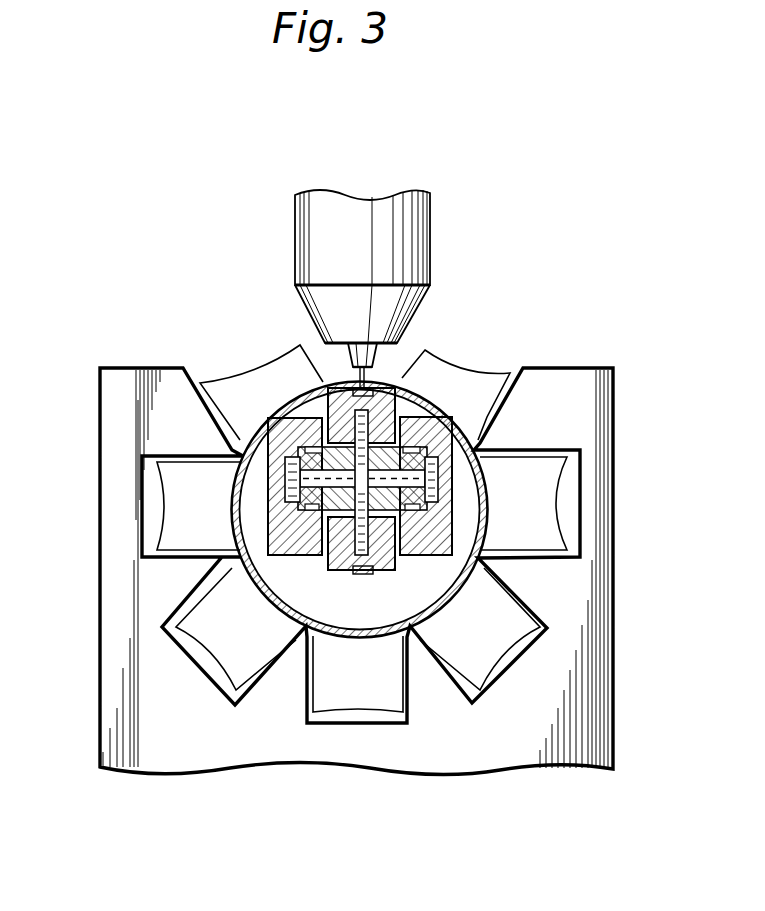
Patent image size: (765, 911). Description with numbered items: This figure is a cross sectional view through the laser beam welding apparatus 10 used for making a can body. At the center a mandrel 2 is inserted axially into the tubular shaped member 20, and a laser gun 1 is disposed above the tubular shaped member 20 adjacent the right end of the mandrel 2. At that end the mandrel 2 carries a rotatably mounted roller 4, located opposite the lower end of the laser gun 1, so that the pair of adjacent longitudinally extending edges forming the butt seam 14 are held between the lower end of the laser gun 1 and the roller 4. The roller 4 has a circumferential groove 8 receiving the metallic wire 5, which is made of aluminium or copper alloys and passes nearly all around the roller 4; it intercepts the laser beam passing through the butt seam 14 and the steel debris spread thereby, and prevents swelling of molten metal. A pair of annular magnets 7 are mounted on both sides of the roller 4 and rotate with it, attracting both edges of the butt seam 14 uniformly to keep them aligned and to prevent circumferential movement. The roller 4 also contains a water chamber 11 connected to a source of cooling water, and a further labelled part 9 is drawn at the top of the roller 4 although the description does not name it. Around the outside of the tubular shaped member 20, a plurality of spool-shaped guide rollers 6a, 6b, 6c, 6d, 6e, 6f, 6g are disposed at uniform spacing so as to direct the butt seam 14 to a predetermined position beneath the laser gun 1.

The laser gun 1 is at (420, 232).
The mandrel 2 is at (282, 530).
The roller 4 is at (400, 508).
The metallic wire 5 is at (350, 362).
The spool-shaped guide roller 6a is at (400, 405).
The spool-shaped guide roller 6b is at (267, 373).
The spool-shaped guide roller 6c is at (178, 520).
The spool-shaped guide roller 6d is at (233, 650).
The spool-shaped guide roller 6e is at (370, 695).
The spool-shaped guide roller 6f is at (492, 627).
The spool-shaped guide roller 6g is at (537, 495).
The annular magnet 7 is at (425, 392).
The circumferential groove 8 is at (448, 373).
The central rod 9 is at (373, 376).
The laser beam welding apparatus 10 is at (614, 102).
The water chamber 11 is at (437, 478).
The butt seam 14 is at (397, 372).
The tubular shaped member 20 is at (262, 428).